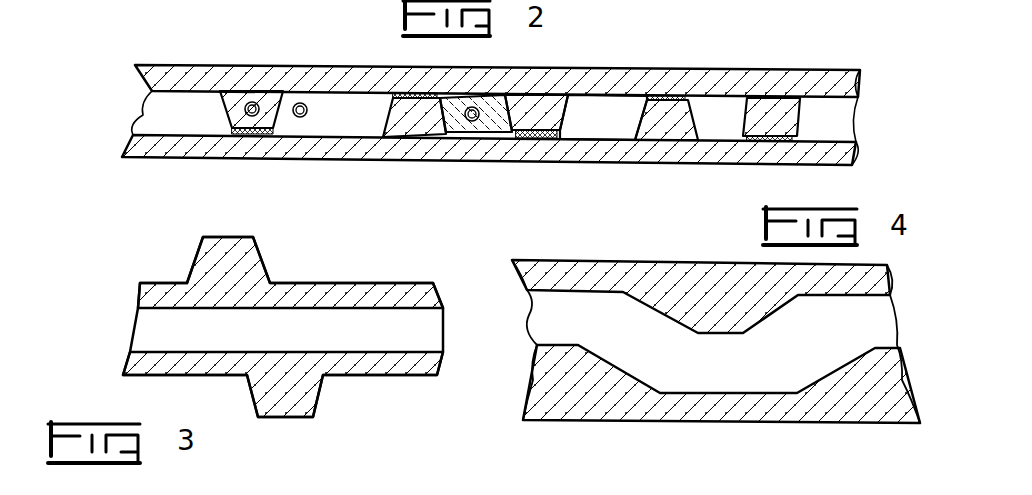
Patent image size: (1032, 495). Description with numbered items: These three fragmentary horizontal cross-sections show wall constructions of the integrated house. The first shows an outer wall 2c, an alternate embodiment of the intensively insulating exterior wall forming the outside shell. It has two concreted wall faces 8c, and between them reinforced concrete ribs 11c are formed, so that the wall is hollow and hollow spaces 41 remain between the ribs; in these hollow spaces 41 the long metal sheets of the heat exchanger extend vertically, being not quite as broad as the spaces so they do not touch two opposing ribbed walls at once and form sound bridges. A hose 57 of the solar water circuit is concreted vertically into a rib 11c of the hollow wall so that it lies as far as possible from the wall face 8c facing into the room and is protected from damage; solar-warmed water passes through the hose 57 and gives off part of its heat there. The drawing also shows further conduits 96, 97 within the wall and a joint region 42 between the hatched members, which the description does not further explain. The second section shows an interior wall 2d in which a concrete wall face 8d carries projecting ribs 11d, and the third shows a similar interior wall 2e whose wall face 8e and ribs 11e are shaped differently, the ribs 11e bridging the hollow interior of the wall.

In FIG. 2, the outer wall 2c is at (135, 67).
In FIG. 2, the wall face 8c is at (347, 150).
In FIG. 2, the rib 11c is at (415, 133).
In FIG. 2, the hose 57 is at (230, 134).
In FIG. 2, the conduit 96 is at (295, 116).
In FIG. 2, the conduit 97 is at (478, 133).
In FIG. 2, the adhesive joint 42 is at (535, 139).
In FIG. 2, the hollow space 41 is at (610, 122).
In FIG. 3, the interior wall 2d is at (140, 305).
In FIG. 3, the wall face 8d is at (320, 283).
In FIG. 3, the rib 11d is at (313, 385).
In FIG. 4, the interior wall 2e is at (530, 308).
In FIG. 4, the wall face 8e is at (827, 417).
In FIG. 4, the rib 11e is at (567, 410).